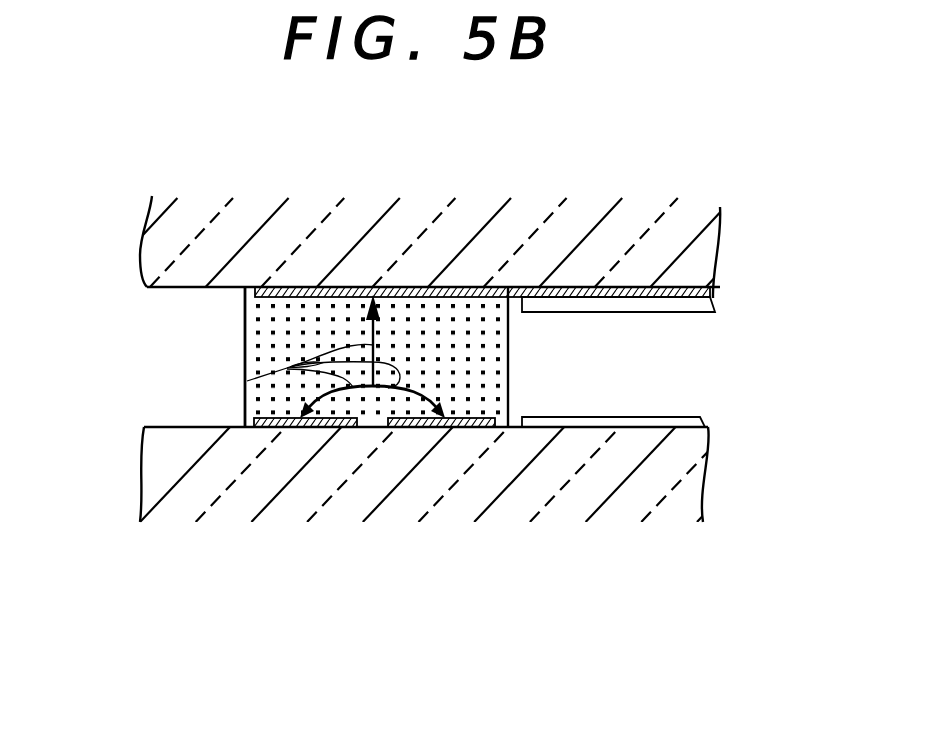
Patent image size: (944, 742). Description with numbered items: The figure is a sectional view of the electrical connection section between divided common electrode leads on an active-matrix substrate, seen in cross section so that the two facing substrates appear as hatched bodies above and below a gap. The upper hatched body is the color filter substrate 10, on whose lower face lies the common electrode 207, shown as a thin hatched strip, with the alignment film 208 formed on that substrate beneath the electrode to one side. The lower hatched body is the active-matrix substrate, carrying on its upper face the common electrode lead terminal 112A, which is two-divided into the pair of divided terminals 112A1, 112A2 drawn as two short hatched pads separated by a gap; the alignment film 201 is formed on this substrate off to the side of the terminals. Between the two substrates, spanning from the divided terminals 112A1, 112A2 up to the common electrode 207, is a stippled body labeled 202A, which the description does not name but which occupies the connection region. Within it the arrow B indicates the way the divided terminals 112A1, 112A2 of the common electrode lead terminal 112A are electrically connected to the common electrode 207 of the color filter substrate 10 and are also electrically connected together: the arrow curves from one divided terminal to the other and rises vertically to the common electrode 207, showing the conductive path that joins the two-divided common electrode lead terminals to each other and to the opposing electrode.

The color filter substrate 10 is at (368, 210).
The common electrode 207 is at (631, 292).
The alignment film 208 is at (680, 312).
The alignment film 201 is at (668, 424).
The liquid crystal layer region 202A is at (245, 323).
The arrow B is at (247, 381).
The common electrode lead terminal 112A is at (372, 526).
The divided terminal 112A1 is at (307, 428).
The divided terminal 112A2 is at (443, 494).